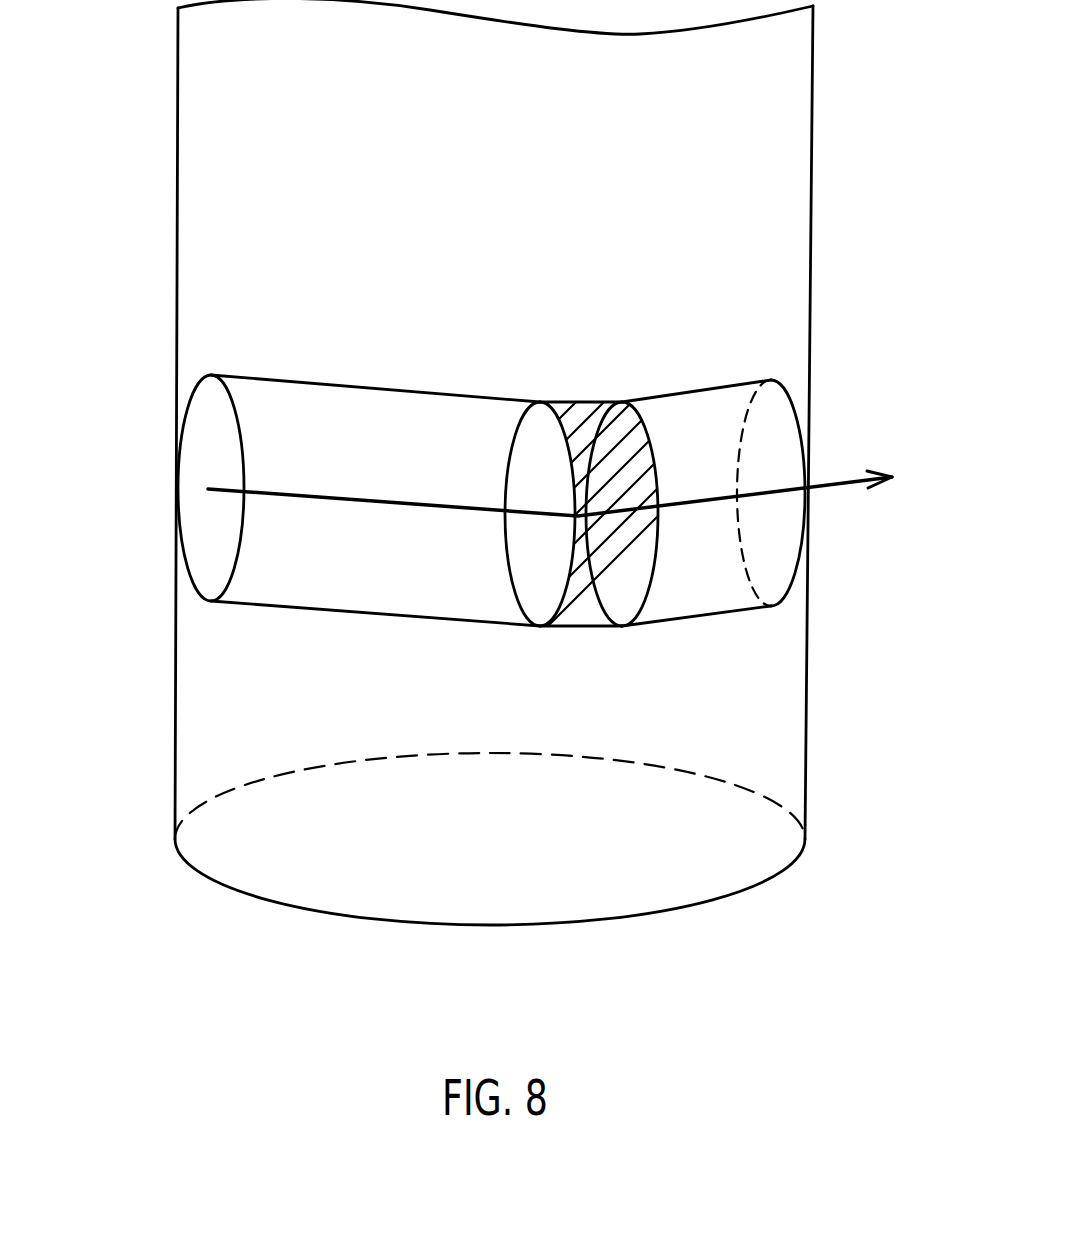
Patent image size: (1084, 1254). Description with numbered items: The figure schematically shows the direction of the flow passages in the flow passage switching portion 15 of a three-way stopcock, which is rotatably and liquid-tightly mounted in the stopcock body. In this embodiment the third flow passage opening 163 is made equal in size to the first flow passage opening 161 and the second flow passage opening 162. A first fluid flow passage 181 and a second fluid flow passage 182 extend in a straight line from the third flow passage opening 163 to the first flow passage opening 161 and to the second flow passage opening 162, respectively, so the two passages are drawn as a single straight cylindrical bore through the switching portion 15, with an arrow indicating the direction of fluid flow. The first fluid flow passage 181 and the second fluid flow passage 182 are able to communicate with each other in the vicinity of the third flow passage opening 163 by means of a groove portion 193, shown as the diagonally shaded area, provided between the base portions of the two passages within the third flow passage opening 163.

The flow passage switching portion 15 is at (793, 788).
The first flow passage opening 161 is at (195, 533).
The second flow passage opening 162 is at (777, 422).
The third flow passage opening 163 is at (593, 403).
The first fluid flow passage 181 is at (387, 530).
The second fluid flow passage 182 is at (682, 595).
The groove portion 193 is at (565, 412).